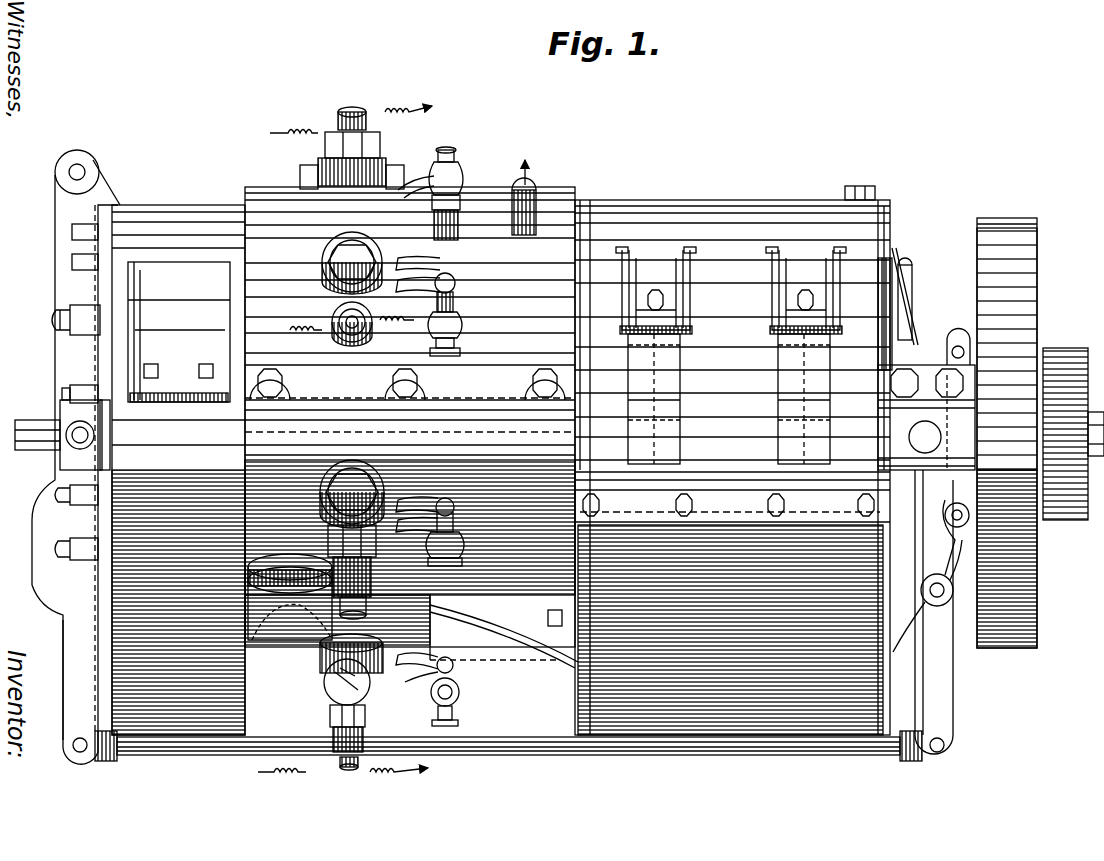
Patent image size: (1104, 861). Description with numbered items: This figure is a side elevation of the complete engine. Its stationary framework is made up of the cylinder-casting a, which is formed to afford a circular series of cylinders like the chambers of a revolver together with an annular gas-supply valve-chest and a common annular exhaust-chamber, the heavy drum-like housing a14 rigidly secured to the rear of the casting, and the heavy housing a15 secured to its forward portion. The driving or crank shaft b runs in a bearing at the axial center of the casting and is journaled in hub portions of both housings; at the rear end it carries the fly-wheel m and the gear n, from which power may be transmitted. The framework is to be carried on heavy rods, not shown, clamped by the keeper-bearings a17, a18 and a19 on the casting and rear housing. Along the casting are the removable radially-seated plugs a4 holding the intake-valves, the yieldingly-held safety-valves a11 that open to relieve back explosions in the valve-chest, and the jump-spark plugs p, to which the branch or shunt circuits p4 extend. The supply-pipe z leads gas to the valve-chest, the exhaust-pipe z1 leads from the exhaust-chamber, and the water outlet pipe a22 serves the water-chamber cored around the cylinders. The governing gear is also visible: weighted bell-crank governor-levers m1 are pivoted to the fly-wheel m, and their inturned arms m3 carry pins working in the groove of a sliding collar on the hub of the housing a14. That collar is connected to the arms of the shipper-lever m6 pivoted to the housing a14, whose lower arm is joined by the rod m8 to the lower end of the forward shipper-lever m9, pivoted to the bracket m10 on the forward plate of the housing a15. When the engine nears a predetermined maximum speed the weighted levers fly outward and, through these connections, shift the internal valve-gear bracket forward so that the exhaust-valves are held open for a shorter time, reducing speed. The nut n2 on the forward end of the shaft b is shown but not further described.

The bracket m10 is at (92, 170).
The shipper-lever m9 is at (72, 292).
The driving-shaft b is at (24, 421).
The shaft nut n2 is at (58, 467).
The housing a15 is at (192, 220).
The cylinder-casting a is at (290, 198).
The jump-spark plugs p is at (350, 115).
The shunt circuits p4 is at (424, 110).
The supply-pipe z is at (440, 160).
The water outlet pipe a22 is at (540, 198).
The drum-like housing a14 is at (720, 208).
The fly-wheel m is at (988, 233).
The radially-seated plugs a4 is at (320, 272).
The safety-valves a11 is at (445, 282).
The keeper-bearing a17 is at (540, 427).
The keeper-bearing a18 is at (783, 385).
The keeper-bearing a19 is at (912, 428).
The gear n is at (1068, 510).
The inturned arms m3 is at (966, 524).
The governor-levers m1 is at (940, 592).
The shipper-lever m6 is at (944, 706).
The exhaust-pipe z1 is at (234, 658).
The rod m8 is at (232, 754).